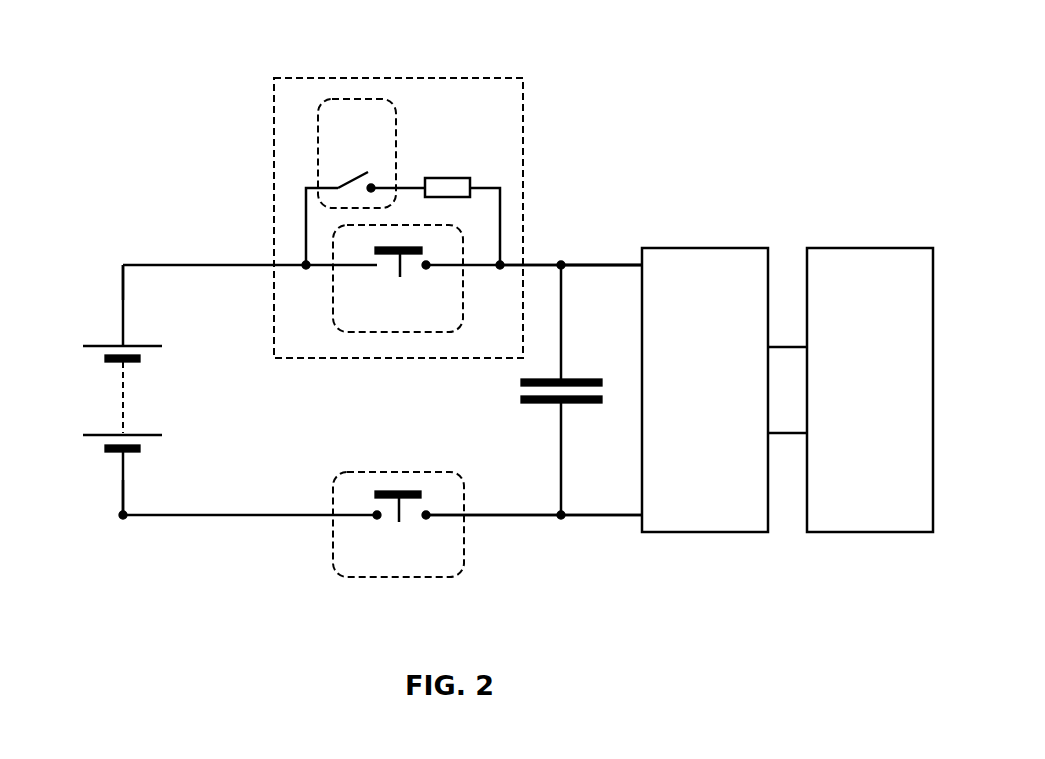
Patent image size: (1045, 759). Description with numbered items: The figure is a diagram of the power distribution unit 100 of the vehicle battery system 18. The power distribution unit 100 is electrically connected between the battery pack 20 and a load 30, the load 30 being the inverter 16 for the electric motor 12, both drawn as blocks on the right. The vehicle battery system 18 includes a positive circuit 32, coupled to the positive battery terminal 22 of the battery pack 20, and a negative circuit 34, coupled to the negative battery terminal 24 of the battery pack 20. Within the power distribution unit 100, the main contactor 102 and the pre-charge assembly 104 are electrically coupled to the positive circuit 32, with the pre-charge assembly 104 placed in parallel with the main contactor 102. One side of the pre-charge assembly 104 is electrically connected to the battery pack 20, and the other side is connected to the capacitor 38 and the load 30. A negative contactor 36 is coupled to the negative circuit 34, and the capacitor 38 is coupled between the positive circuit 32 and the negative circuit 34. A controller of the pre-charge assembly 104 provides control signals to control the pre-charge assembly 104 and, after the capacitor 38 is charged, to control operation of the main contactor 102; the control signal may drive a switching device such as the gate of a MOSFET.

The electric motor 12 is at (883, 247).
The inverter 16 is at (730, 247).
The vehicle battery system 18 is at (195, 133).
The battery pack 20 is at (92, 367).
The positive battery terminal 22 is at (123, 292).
The negative battery terminal 24 is at (120, 493).
The load 30 is at (622, 258).
The positive circuit 32 is at (588, 263).
The negative circuit 34 is at (580, 517).
The negative contactor 36 is at (452, 585).
The capacitor 38 is at (523, 405).
The power distribution unit 100 is at (406, 193).
The main contactor 102 is at (457, 233).
The pre-charge assembly 104 is at (298, 148).